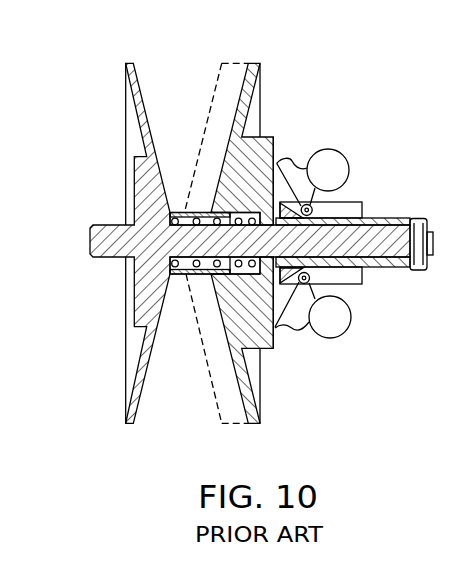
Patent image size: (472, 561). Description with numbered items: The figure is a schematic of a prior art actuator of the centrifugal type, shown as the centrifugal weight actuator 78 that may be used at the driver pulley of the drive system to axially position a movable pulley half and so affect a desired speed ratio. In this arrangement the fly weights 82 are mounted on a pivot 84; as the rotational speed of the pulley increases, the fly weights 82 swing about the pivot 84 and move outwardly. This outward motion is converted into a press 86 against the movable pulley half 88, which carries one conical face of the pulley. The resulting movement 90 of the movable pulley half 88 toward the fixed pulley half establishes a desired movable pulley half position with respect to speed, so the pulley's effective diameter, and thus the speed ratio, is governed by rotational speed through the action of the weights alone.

The centrifugal weight actuator 78 is at (84, 72).
The fly weights 82 is at (341, 158).
The pivot 84 is at (310, 280).
The press 86 is at (275, 350).
The movable pulley half 88 is at (256, 72).
The movement 90 is at (221, 74).